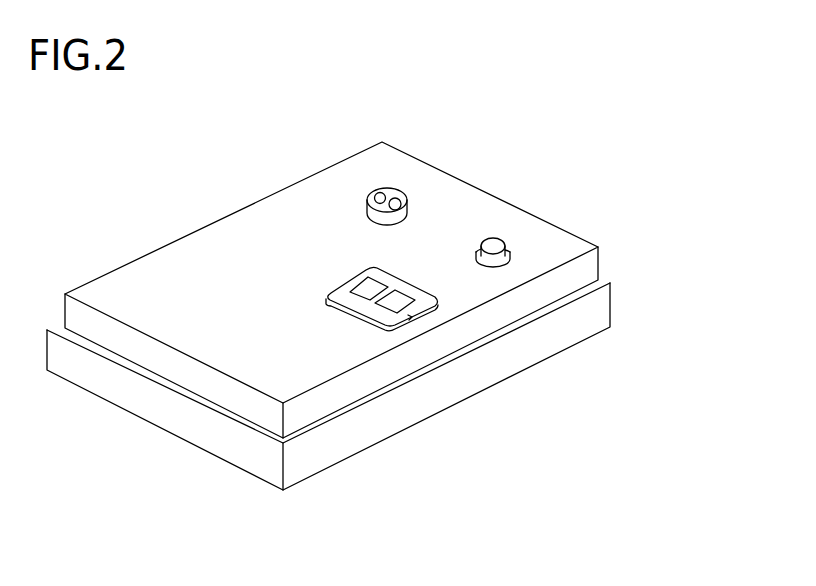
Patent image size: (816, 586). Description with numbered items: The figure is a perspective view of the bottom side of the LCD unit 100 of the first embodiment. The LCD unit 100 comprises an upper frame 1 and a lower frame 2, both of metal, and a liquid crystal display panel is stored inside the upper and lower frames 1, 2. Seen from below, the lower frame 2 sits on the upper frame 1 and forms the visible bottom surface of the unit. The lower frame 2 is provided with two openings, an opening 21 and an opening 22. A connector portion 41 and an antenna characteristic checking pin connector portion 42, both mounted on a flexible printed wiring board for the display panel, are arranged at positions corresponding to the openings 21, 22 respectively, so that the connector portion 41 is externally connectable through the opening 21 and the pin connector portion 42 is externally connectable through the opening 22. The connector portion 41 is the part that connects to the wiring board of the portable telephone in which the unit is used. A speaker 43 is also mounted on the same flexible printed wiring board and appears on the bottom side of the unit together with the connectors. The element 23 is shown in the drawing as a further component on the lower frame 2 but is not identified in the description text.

The LCD unit 100 is at (191, 176).
The upper frame 1 is at (165, 412).
The lower frame 2 is at (282, 224).
The opening 21 is at (384, 384).
The opening 22 is at (521, 347).
The fixing boss 23 is at (414, 152).
The connector portion 41 is at (367, 303).
The antenna characteristic checking pin connector portion 42 is at (492, 265).
The speaker 43 is at (377, 197).